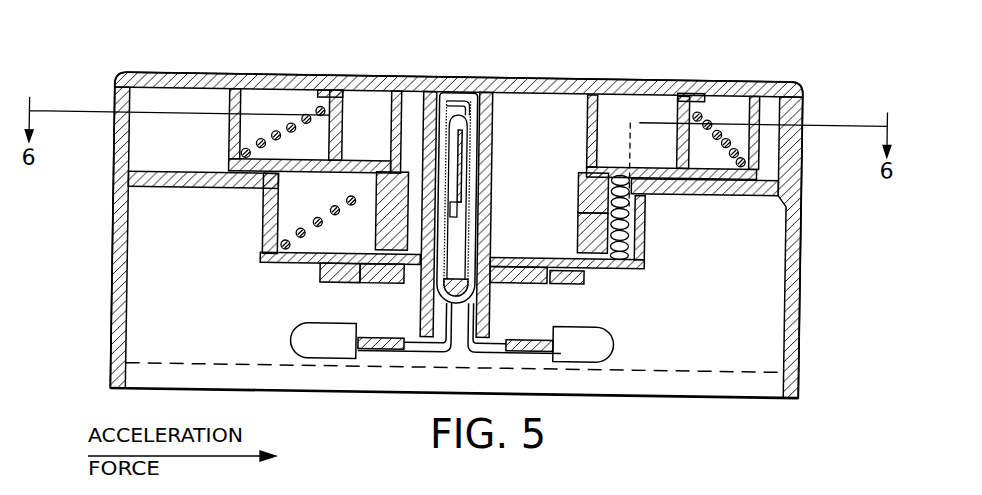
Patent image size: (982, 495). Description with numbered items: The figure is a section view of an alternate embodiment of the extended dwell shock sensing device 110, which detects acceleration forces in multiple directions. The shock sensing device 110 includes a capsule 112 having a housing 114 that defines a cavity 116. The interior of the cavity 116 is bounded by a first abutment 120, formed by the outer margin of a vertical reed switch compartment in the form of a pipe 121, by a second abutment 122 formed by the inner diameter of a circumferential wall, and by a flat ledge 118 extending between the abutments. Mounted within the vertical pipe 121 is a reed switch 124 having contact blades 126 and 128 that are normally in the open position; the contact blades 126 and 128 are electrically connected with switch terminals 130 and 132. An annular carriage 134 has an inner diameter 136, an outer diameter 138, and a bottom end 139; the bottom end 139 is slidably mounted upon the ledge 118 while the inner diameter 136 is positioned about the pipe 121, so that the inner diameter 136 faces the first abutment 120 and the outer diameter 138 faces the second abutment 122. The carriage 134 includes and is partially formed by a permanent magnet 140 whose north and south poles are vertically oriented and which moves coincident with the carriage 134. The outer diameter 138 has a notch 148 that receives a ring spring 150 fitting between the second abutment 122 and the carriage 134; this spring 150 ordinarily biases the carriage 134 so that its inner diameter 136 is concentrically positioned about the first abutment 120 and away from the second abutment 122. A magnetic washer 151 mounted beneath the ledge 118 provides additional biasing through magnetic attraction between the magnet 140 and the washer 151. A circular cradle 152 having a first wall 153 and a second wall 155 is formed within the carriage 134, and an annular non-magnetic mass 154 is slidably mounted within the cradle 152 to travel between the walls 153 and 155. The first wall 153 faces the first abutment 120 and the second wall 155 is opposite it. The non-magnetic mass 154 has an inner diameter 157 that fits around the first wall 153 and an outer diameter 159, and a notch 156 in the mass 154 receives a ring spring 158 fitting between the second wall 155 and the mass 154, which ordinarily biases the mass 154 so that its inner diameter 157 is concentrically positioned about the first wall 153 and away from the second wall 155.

The shock sensing device 110 is at (812, 235).
The capsule 112 is at (803, 331).
The housing 114 is at (800, 385).
The cavity 116 is at (160, 125).
The flat ledge 118 is at (323, 262).
The first abutment 120 is at (490, 103).
The pipe 121 is at (489, 150).
The second abutment 122 is at (263, 197).
The reed switch 124 is at (436, 110).
The contact blade 126 is at (463, 188).
The contact blade 128 is at (440, 300).
The switch terminal 130 is at (522, 350).
The switch terminal 132 is at (425, 357).
The annular carriage 134 is at (613, 262).
The inner diameter 136 is at (580, 195).
The outer diameter 138 is at (377, 239).
The bottom end 139 is at (593, 262).
The permanent magnet 140 is at (580, 230).
The notch 148 is at (372, 194).
The ring spring 150 is at (333, 207).
The magnetic washer 151 is at (590, 280).
The circular cradle 152 is at (382, 93).
The first wall 153 is at (592, 97).
The non-magnetic mass 154 is at (693, 93).
The second wall 155 is at (753, 97).
The notch 156 is at (312, 96).
The inner diameter 157 is at (391, 157).
The ring spring 158 is at (302, 105).
The outer diameter 159 is at (324, 124).